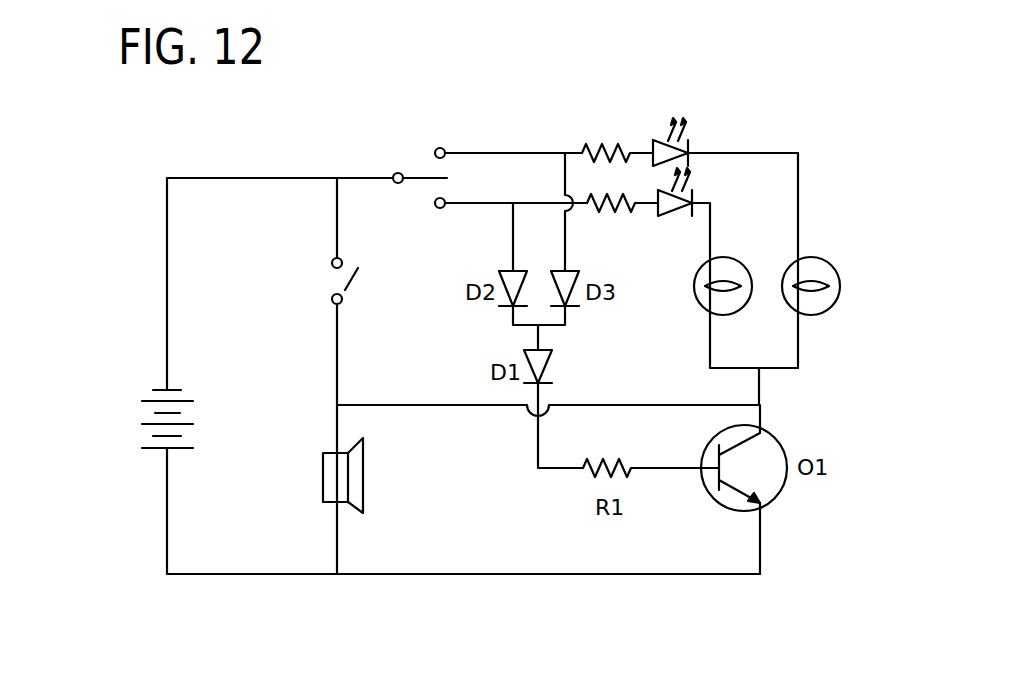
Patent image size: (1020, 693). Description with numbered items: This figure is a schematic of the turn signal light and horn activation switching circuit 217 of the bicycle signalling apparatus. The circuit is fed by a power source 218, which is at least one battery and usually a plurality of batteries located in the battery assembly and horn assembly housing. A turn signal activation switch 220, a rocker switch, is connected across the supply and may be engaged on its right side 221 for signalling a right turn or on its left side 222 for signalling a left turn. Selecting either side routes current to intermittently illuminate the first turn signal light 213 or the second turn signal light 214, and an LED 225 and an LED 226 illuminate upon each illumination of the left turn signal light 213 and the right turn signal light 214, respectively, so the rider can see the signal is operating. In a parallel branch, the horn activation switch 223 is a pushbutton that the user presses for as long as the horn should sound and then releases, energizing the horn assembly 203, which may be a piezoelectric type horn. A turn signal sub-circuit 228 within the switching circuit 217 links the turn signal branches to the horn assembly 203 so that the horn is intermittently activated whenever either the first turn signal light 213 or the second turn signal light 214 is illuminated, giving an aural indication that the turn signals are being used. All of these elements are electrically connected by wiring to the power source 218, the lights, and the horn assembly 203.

The turn signal light and horn activation switching circuit 217 is at (206, 164).
The power source 218 is at (148, 390).
The turn signal activation switch 220 is at (392, 174).
The right side 221 is at (444, 208).
The left side 222 is at (445, 149).
The horn activation switch 223 is at (352, 284).
The LED 225 is at (690, 137).
The LED 226 is at (681, 218).
The first turn signal light 213 is at (718, 256).
The second turn signal light 214 is at (812, 256).
The horn assembly 203 is at (335, 467).
The turn signal sub-circuit 228 is at (442, 404).